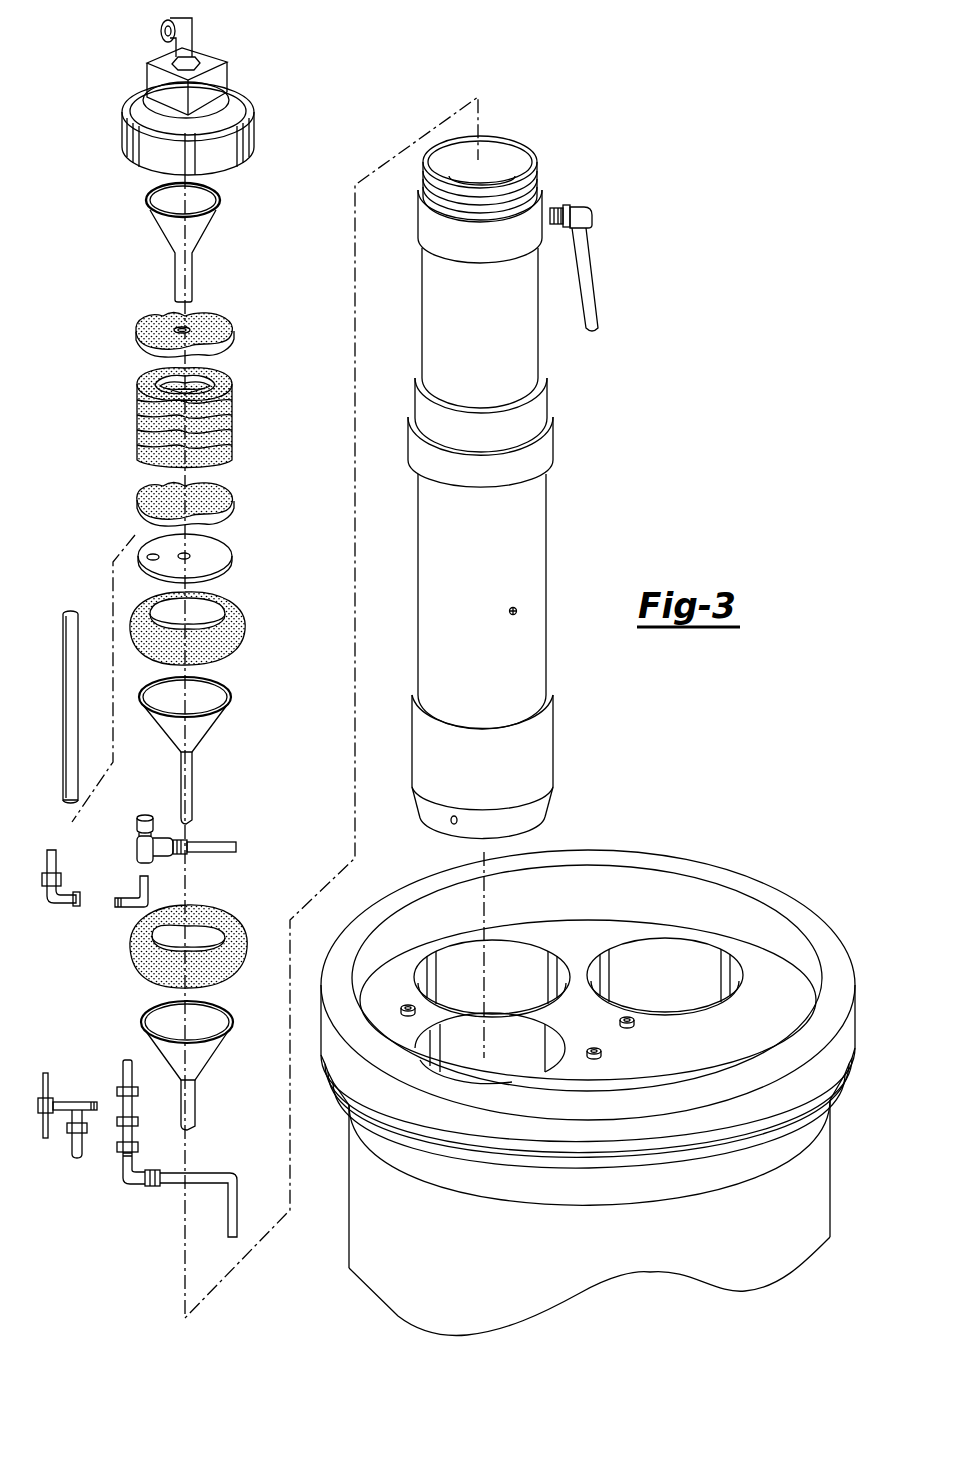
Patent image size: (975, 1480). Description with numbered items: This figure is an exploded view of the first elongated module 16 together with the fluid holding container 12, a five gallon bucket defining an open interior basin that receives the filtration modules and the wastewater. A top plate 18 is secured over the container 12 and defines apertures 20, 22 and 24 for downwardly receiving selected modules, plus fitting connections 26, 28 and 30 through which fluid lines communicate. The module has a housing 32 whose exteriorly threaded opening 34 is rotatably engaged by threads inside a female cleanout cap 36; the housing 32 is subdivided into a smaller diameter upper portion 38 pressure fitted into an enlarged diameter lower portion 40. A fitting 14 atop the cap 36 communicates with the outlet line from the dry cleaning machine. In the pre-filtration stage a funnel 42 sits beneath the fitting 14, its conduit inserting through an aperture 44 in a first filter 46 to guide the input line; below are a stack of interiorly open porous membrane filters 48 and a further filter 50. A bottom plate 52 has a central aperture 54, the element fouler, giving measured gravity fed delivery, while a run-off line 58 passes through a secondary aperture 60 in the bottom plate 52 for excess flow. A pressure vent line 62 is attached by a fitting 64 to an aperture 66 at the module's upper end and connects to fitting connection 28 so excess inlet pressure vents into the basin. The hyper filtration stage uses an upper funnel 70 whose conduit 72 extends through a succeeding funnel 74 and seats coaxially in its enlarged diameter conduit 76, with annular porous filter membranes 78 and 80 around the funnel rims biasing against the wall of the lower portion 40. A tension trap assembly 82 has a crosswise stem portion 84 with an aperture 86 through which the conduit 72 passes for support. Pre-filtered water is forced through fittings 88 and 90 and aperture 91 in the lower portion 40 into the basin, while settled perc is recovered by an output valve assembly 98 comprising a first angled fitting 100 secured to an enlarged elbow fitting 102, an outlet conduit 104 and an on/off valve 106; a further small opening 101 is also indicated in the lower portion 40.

The fluid holding container 12 is at (588, 1075).
The fitting 14 is at (193, 27).
The first elongated module 16 is at (313, 170).
The top plate 18 is at (778, 985).
The aperture 20 is at (508, 1057).
The aperture 22 is at (672, 955).
The aperture 24 is at (537, 957).
The fitting connection 26 is at (603, 1050).
The fitting connection 28 is at (635, 1018).
The fitting connection 30 is at (405, 1005).
The housing 32 is at (541, 476).
The exteriorly threaded opening 34 is at (538, 175).
The cap 36 is at (124, 102).
The upper portion 38 is at (530, 347).
The lower portion 40 is at (530, 543).
The funnel 42 is at (150, 218).
The aperture 44 is at (178, 316).
The first filter 46 is at (214, 318).
The stack of porous membrane filters 48 is at (138, 425).
The filter 50 is at (152, 492).
The bottom plate 52 is at (215, 548).
The central aperture 54 is at (190, 556).
The run-off line 58 is at (72, 612).
The secondary aperture 60 is at (147, 557).
The pressure vent line 62 is at (596, 285).
The fitting 64 is at (593, 217).
The aperture 66 is at (548, 210).
The upper funnel 70 is at (212, 722).
The conduit 72 is at (188, 782).
The second funnel 74 is at (152, 1048).
The enlarged diameter conduit 76 is at (195, 1105).
The porous filter membrane 78 is at (233, 640).
The porous filter membrane 80 is at (227, 965).
The tension trap assembly 82 is at (140, 843).
The stem portion 84 is at (236, 847).
The aperture 86 is at (188, 849).
The fitting 88 is at (128, 903).
The fitting 90 is at (58, 904).
The aperture 91 is at (518, 611).
The output valve assembly 98 is at (145, 1163).
The first angled fitting 100 is at (220, 1173).
The hole 101 is at (450, 820).
The elbow fitting 102 is at (130, 1184).
The outlet conduit 104 is at (125, 1073).
The on/off valve 106 is at (100, 1163).